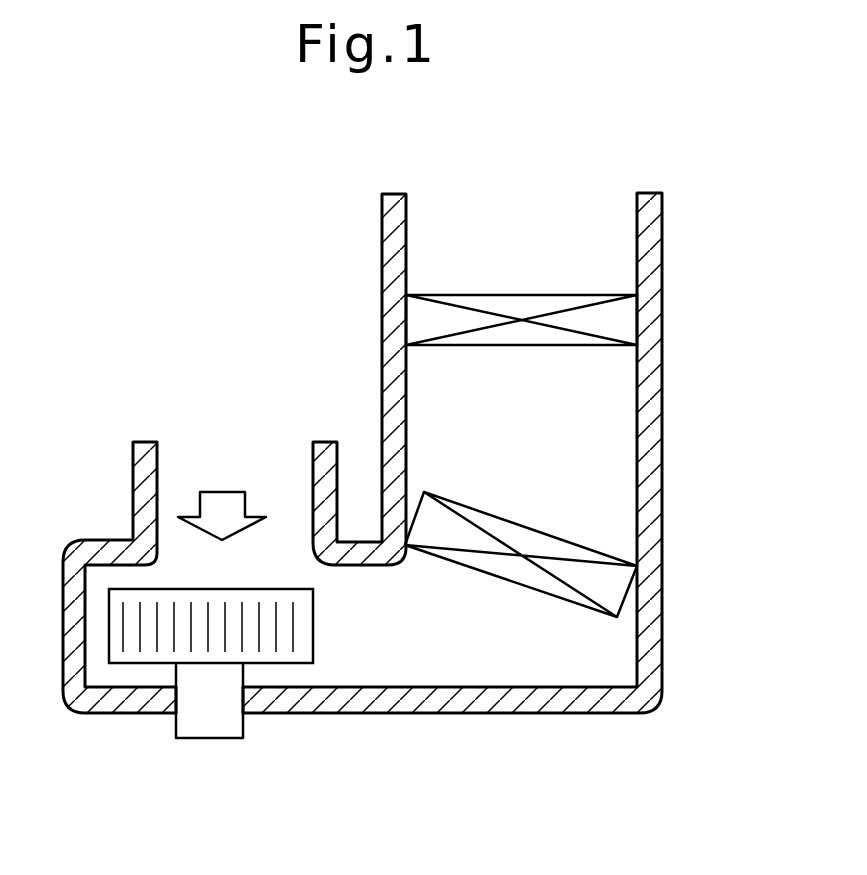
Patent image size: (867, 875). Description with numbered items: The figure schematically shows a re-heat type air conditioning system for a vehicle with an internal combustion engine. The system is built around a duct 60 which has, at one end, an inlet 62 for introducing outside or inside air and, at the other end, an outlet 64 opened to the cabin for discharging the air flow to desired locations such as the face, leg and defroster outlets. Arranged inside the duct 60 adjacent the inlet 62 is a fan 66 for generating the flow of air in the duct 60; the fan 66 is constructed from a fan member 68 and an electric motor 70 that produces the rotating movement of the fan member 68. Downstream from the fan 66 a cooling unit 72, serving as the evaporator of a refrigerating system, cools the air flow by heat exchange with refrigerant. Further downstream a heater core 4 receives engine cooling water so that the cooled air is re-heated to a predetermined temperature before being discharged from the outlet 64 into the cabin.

The heater core 4 is at (620, 325).
The duct 60 is at (650, 460).
The inlet 62 is at (232, 458).
The outlet 64 is at (522, 240).
The fan 66 is at (162, 792).
The fan member 68 is at (132, 650).
The electric motor 70 is at (188, 713).
The cooling unit 72 is at (607, 590).